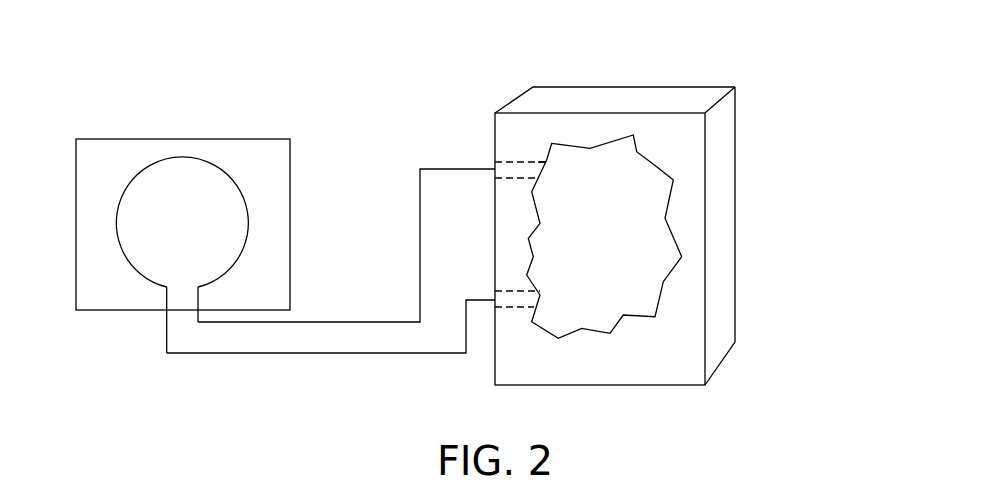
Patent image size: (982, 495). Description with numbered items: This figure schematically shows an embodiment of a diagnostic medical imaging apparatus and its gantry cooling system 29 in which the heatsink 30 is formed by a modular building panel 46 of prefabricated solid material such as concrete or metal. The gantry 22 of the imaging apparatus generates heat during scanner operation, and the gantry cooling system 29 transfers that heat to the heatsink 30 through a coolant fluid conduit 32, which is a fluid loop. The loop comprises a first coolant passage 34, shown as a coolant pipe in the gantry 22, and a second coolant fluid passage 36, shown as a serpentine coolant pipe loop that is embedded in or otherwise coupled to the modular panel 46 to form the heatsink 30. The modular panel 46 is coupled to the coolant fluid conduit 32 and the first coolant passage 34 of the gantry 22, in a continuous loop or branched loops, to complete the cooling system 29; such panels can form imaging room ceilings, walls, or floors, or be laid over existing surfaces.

The gantry 22 is at (294, 160).
The first coolant passage 34 is at (210, 163).
The gantry cooling system 29 is at (443, 162).
The coolant fluid conduit 32 is at (298, 356).
The heatsink 30 is at (680, 238).
The second coolant fluid passage 36 is at (628, 192).
The modular panel 46 is at (742, 263).